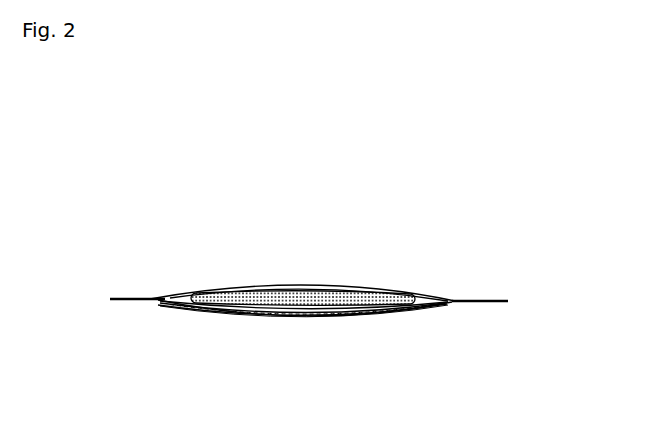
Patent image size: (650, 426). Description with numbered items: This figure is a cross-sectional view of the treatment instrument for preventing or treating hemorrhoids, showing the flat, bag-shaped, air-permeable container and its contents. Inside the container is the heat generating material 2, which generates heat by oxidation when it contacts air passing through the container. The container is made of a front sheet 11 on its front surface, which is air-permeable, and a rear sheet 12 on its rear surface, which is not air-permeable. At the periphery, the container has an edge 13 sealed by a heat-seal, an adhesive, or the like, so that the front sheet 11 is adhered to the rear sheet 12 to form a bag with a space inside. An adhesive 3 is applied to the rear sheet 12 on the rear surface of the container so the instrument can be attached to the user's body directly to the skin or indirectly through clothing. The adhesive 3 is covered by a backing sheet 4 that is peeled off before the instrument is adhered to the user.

The heat generating material 2 is at (298, 296).
The adhesive 3 is at (260, 315).
The backing sheet 4 is at (165, 308).
The front sheet 11 is at (190, 294).
The rear sheet 12 is at (450, 307).
The edge 13 is at (492, 300).